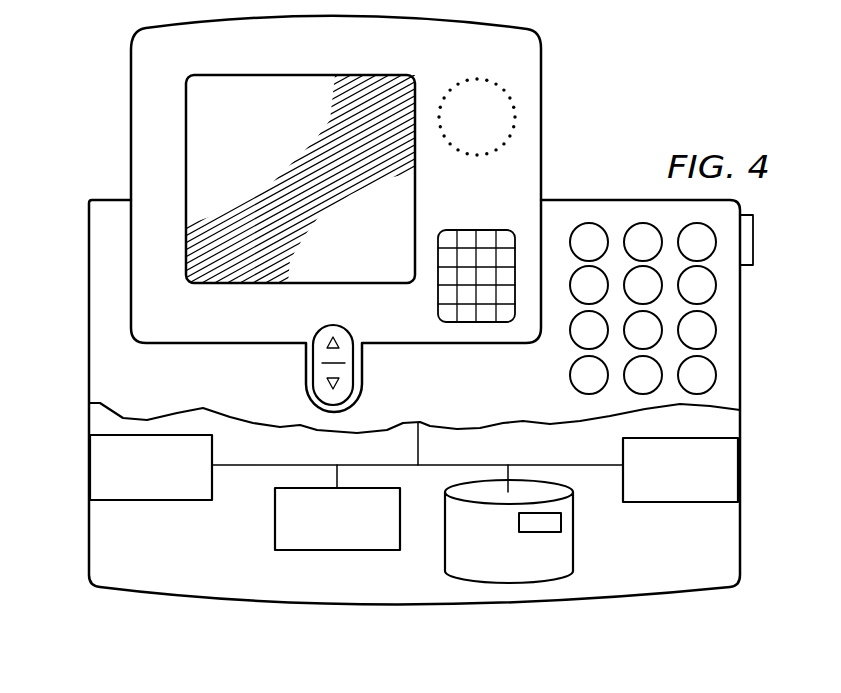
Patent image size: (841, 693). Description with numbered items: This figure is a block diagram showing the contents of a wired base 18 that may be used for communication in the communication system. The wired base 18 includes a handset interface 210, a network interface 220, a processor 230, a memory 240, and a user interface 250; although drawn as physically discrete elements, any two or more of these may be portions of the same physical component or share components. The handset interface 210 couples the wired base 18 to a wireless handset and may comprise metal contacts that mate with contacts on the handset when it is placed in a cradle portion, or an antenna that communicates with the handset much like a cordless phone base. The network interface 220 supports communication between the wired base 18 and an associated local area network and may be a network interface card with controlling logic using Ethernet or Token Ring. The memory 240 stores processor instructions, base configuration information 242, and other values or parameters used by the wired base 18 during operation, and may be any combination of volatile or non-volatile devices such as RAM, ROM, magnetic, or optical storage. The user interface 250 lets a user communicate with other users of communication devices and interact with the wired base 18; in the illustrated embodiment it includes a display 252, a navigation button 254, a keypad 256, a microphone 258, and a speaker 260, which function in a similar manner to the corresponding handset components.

The wired base 18 is at (638, 72).
The user interface 250 is at (124, 109).
The display 252 is at (303, 75).
The navigation button 254 is at (308, 340).
The keypad 256 is at (547, 358).
The microphone 258 is at (452, 75).
The speaker 260 is at (484, 229).
The handset interface 210 is at (148, 502).
The network interface 220 is at (683, 504).
The processor 230 is at (275, 518).
The memory 240 is at (542, 524).
The base configuration information 242 is at (518, 521).